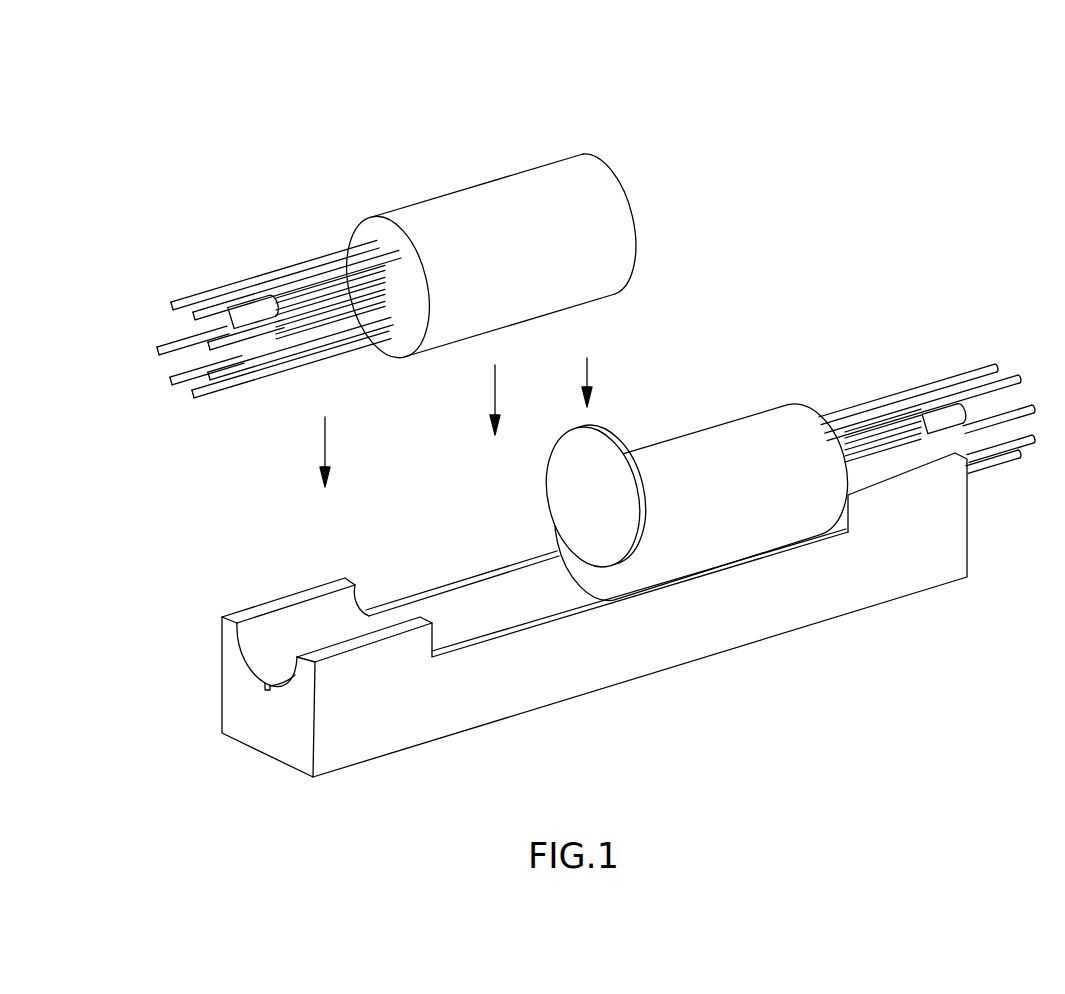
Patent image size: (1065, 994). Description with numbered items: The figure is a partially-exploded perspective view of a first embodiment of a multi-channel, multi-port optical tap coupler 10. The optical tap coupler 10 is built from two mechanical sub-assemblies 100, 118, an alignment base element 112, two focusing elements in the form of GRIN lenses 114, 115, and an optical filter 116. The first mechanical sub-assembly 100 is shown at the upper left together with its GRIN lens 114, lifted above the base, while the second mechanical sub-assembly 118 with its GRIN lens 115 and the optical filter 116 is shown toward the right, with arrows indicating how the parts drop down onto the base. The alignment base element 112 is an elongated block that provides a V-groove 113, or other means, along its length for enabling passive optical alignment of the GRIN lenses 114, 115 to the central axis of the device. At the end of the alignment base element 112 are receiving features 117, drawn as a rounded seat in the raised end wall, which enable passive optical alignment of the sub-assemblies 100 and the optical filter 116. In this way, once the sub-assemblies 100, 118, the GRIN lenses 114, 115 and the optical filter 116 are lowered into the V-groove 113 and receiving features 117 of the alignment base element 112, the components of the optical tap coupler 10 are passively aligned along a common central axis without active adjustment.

The multi-channel, multi-port optical tap coupler 10 is at (852, 165).
The mechanical sub-assembly 100 is at (205, 213).
The GRIN lens 114 is at (575, 172).
The mechanical sub-assembly 118 is at (888, 330).
The GRIN lens 115 is at (768, 425).
The optical filter 116 is at (580, 484).
The alignment base element 112 is at (608, 643).
The V-groove 113 is at (472, 608).
The receiving features 117 is at (272, 625).